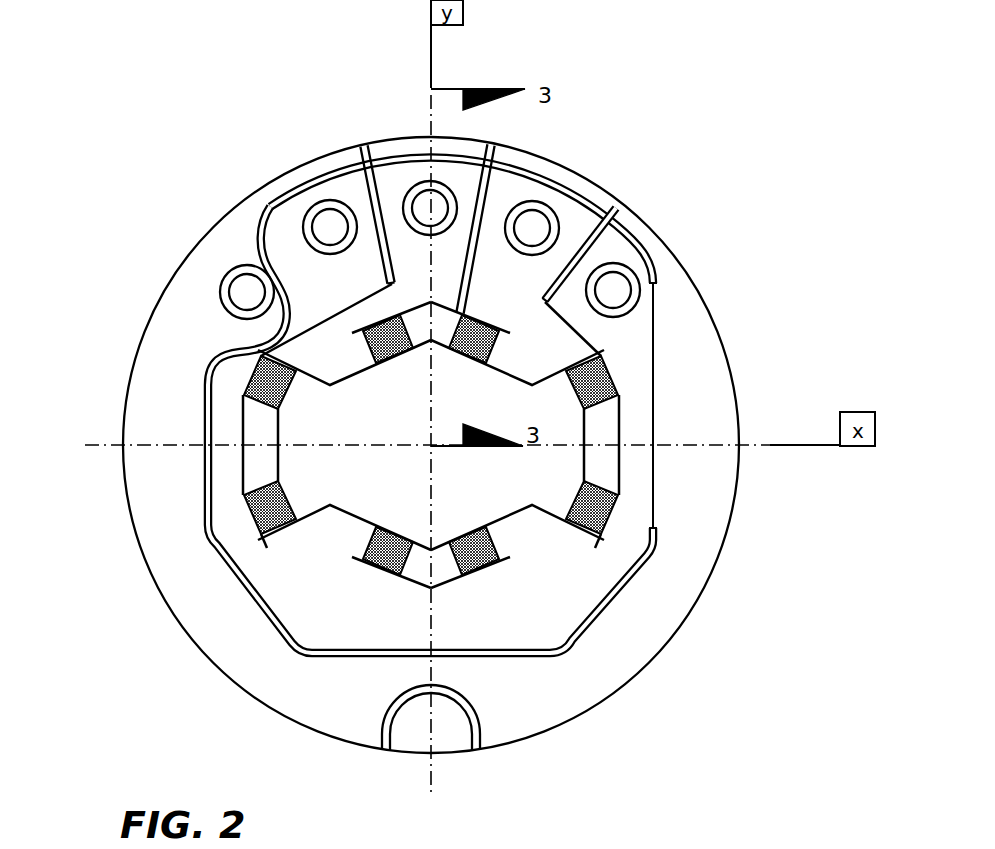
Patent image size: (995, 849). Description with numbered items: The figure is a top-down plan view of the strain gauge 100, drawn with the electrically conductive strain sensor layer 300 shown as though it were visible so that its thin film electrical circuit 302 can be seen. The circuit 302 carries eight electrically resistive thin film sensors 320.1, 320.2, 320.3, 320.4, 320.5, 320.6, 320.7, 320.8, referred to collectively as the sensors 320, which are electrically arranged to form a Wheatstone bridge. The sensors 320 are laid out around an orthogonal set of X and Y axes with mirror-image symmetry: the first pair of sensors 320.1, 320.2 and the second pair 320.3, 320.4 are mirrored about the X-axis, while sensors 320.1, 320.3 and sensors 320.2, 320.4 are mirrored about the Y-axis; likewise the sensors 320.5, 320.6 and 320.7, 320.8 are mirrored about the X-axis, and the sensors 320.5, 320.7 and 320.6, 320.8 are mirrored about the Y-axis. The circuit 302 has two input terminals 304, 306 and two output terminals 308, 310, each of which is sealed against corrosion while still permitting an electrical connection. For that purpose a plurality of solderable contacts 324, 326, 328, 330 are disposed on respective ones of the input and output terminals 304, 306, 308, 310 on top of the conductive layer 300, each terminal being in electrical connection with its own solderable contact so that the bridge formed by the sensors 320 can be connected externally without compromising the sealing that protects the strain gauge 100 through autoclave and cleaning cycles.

The strain gauge 100 is at (708, 132).
The electrically conductive strain sensor layer 300 is at (488, 624).
The thin film electrical circuit 302 is at (283, 622).
The input terminal 304 is at (387, 180).
The input terminal 306 is at (605, 250).
The output terminal 308 is at (286, 228).
The output terminal 310 is at (578, 220).
The electrically resistive thin film sensors 320 is at (303, 596).
The electrically resistive thin film sensor 320.1 is at (262, 372).
The electrically resistive thin film sensor 320.2 is at (250, 532).
The electrically resistive thin film sensor 320.3 is at (600, 372).
The electrically resistive thin film sensor 320.4 is at (605, 512).
The electrically resistive thin film sensor 320.5 is at (382, 348).
The electrically resistive thin film sensor 320.6 is at (388, 562).
The electrically resistive thin film sensor 320.7 is at (478, 348).
The electrically resistive thin film sensor 320.8 is at (487, 563).
The solderable contact 324 is at (424, 203).
The solderable contact 326 is at (618, 287).
The solderable contact 328 is at (322, 224).
The solderable contact 330 is at (532, 225).